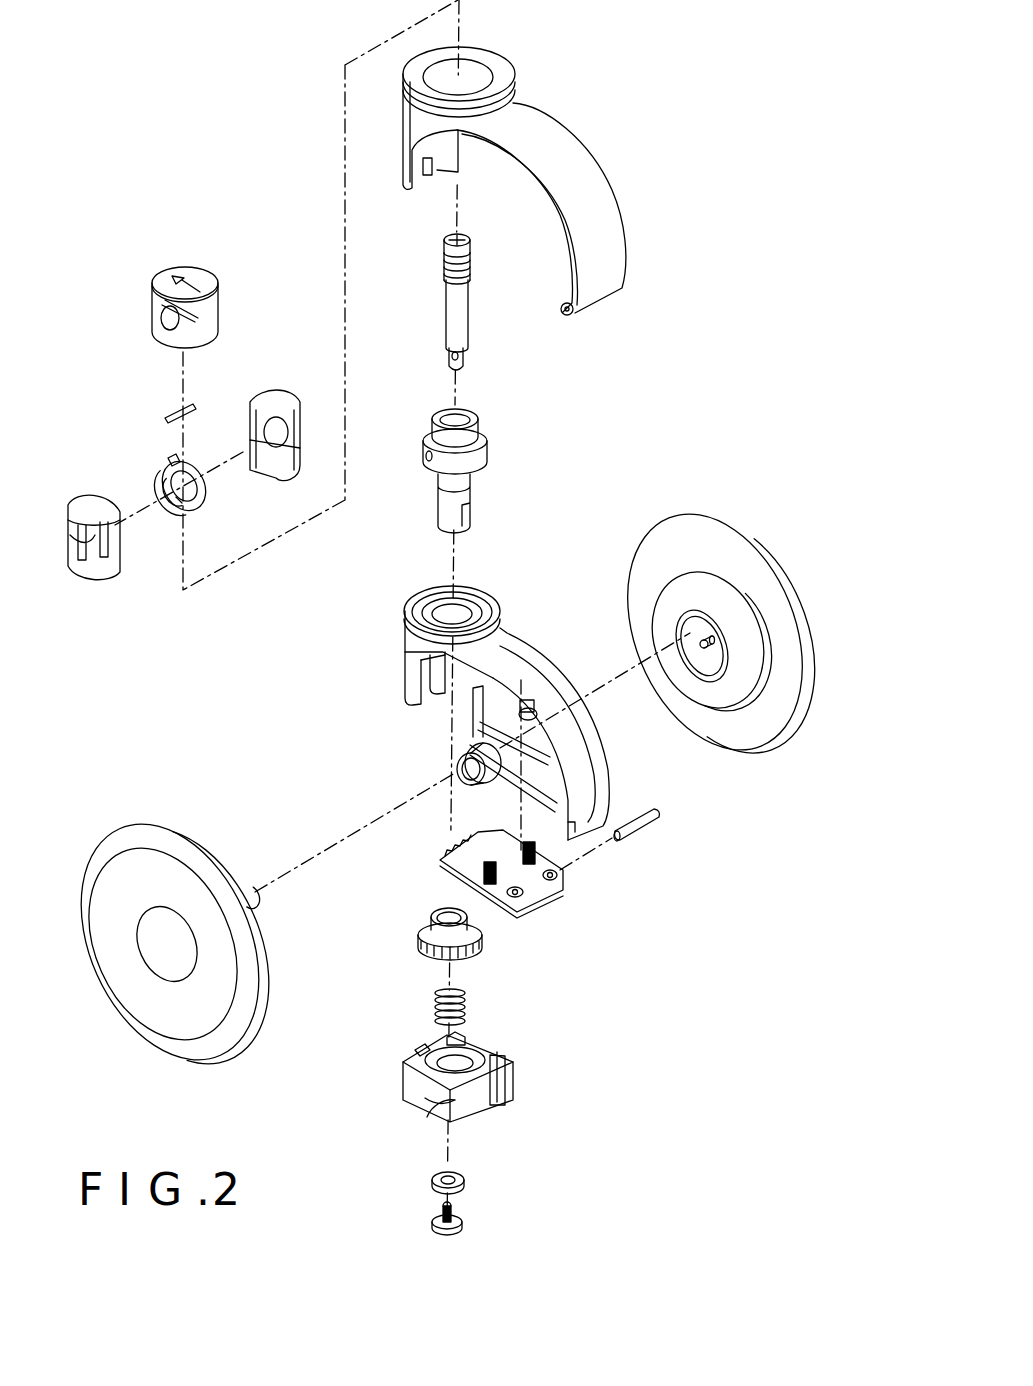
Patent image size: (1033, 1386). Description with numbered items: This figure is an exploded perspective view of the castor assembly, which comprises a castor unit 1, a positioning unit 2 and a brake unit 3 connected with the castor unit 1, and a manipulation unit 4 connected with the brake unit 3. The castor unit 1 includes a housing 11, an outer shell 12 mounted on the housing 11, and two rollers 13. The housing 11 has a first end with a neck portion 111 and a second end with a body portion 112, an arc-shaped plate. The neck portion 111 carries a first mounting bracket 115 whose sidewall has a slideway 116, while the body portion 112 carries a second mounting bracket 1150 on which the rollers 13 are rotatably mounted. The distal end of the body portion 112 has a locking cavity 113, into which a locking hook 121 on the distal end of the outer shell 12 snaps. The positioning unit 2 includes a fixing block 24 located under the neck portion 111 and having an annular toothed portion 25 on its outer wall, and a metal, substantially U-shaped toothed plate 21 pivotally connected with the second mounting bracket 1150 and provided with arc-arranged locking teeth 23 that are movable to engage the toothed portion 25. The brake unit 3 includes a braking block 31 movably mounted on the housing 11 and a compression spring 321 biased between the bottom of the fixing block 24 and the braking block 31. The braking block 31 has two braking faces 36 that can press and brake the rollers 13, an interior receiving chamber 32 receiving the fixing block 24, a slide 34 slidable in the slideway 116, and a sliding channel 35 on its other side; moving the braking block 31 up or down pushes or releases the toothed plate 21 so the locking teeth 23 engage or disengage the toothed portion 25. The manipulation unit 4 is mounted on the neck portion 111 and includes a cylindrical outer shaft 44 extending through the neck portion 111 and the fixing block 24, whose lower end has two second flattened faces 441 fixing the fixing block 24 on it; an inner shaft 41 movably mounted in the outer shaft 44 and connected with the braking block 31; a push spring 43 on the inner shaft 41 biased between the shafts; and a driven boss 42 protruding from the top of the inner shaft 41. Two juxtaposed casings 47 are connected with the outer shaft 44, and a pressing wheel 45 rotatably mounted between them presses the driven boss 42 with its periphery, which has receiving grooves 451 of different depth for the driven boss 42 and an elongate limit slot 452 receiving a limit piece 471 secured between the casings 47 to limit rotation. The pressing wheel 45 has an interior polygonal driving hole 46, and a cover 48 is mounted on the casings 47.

The castor unit 1 is at (288, 733).
The housing 11 is at (535, 638).
The neck portion 111 is at (408, 632).
The body portion 112 is at (607, 763).
The locking cavity 113 is at (560, 860).
The first mounting bracket 115 is at (408, 677).
The slideway 116 is at (428, 703).
The second mounting bracket 1150 is at (472, 733).
The outer shell 12 is at (563, 145).
The locking hook 121 is at (575, 313).
The rollers 13 is at (715, 527).
The positioning unit 2 is at (628, 975).
The toothed plate 21 is at (517, 903).
The locking teeth 23 is at (440, 843).
The fixing block 24 is at (470, 932).
The annular toothed portion 25 is at (460, 957).
The brake unit 3 is at (628, 1105).
The braking block 31 is at (417, 1088).
The receiving chamber 32 is at (477, 1048).
The compression spring 321 is at (463, 1015).
The slide 34 is at (420, 1048).
The sliding channel 35 is at (493, 1107).
The braking faces 36 is at (437, 1117).
The manipulation unit 4 is at (163, 214).
The inner shaft 41 is at (453, 311).
The driven boss 42 is at (448, 240).
The push spring 43 is at (443, 267).
The outer shaft 44 is at (483, 455).
The second flattened faces 441 is at (468, 513).
The pressing wheel 45 is at (172, 503).
The receiving grooves 451 is at (178, 498).
The limit slot 452 is at (177, 462).
The polygonal driving hole 46 is at (163, 483).
The casings 47 is at (283, 400).
The limit piece 471 is at (193, 405).
The cover 48 is at (205, 270).